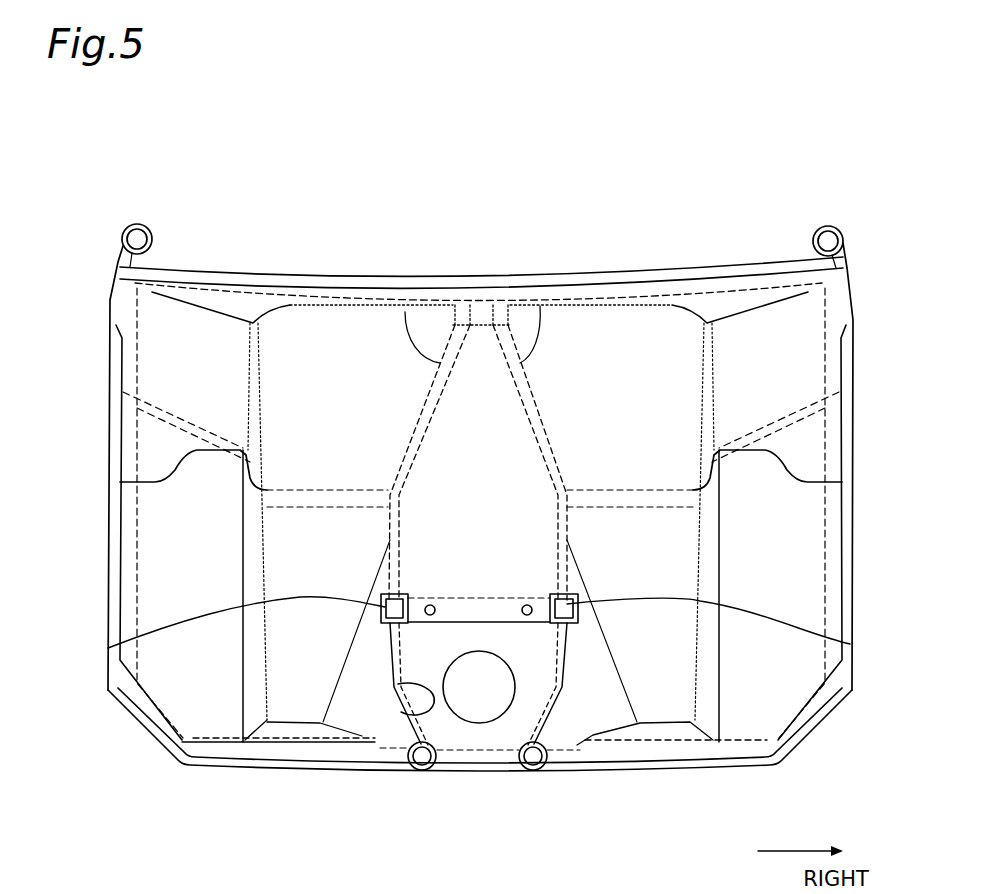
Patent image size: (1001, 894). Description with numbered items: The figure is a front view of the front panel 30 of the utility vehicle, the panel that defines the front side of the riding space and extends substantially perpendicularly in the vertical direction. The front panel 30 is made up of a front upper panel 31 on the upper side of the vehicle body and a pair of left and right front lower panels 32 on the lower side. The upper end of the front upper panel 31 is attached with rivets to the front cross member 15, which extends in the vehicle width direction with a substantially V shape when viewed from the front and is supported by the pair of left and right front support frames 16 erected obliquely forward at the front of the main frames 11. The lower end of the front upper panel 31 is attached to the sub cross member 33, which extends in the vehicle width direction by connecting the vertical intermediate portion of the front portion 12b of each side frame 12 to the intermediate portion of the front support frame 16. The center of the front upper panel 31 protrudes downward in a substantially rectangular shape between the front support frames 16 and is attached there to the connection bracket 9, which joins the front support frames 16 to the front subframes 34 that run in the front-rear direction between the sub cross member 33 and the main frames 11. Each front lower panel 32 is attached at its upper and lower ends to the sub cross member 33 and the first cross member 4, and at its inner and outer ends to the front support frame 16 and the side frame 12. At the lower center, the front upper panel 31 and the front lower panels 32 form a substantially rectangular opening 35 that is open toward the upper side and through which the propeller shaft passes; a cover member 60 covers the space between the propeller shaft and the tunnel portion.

The first cross member 4 is at (238, 770).
The connection bracket 9 is at (557, 625).
The main frame 11 is at (421, 771).
The side frame 12 is at (109, 383).
The front portion of the side frame 12b is at (118, 352).
The front cross member 15 is at (222, 268).
The front support frame 16 is at (406, 312).
The front panel 30 is at (646, 316).
The front upper panel 31 is at (597, 325).
The front lower panel 32 is at (173, 563).
The sub cross member 33 is at (168, 428).
The front subframe 34 is at (108, 648).
The opening 35 is at (382, 748).
The cover member 60 is at (479, 752).